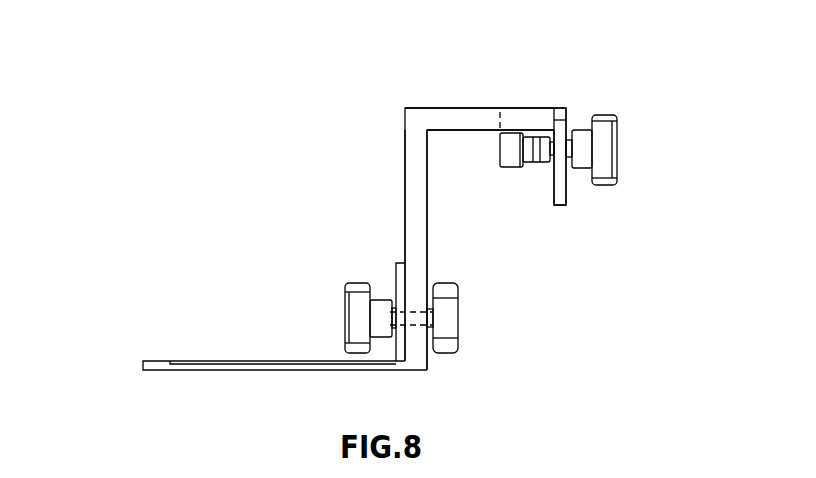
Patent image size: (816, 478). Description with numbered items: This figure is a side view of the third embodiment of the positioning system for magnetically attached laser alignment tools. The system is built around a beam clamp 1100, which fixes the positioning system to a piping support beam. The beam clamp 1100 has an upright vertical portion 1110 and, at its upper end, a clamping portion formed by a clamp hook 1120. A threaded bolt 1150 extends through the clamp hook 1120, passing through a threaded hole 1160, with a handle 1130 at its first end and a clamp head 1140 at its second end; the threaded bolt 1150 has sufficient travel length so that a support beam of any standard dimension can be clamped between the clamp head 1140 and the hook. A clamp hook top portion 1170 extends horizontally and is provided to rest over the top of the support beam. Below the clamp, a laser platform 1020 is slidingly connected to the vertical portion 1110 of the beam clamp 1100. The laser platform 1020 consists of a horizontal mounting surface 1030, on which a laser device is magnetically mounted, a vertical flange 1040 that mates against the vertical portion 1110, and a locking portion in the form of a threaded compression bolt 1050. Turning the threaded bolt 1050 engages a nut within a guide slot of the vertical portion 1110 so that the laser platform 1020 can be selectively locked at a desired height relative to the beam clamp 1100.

The laser platform 1020 is at (163, 371).
The horizontal mounting surface 1030 is at (170, 361).
The vertical flange 1040 is at (394, 275).
The threaded compression bolt 1050 is at (345, 312).
The beam clamp 1100 is at (405, 143).
The vertical portion 1110 is at (418, 206).
The clamp hook 1120 is at (566, 117).
The handle 1130 is at (605, 150).
The clamp head 1140 is at (503, 167).
The threaded bolt 1150 is at (572, 162).
The threaded hole 1160 is at (553, 120).
The clamp hook top portion 1170 is at (445, 108).